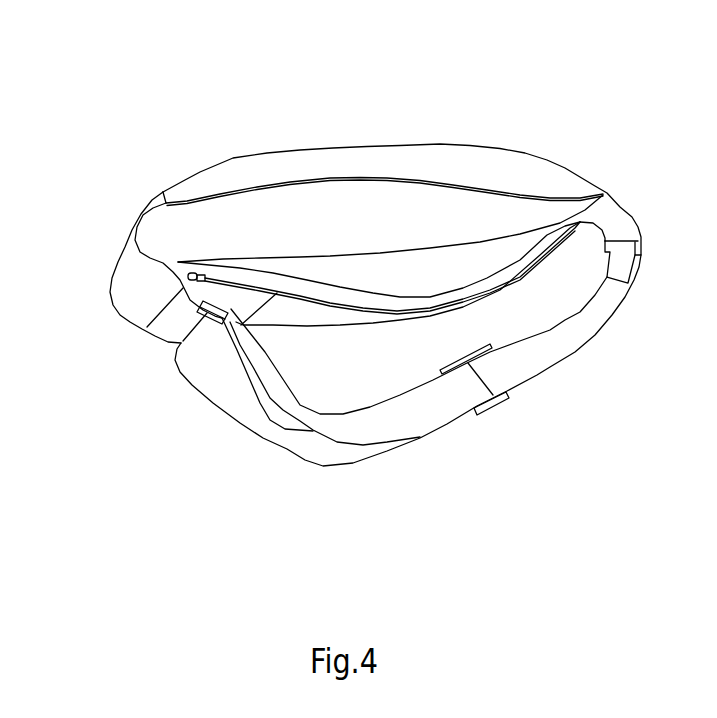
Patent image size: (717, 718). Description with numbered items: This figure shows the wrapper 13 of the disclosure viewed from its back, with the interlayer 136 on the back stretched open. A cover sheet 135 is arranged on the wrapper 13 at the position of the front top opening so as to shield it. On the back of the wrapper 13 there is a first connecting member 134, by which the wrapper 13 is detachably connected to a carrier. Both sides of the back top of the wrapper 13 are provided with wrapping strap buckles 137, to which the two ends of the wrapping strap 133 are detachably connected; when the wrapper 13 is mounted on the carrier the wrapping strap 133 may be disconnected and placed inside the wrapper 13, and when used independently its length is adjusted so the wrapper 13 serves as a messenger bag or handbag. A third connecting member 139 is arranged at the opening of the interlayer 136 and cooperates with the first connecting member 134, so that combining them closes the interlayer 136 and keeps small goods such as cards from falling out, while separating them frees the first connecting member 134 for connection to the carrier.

The wrapper 13 is at (105, 254).
The wrapping strap 133 is at (419, 419).
The first connecting member 134 is at (190, 200).
The cover sheet 135 is at (459, 158).
The interlayer 136 is at (428, 283).
The wrapping strap buckle 137 is at (208, 313).
The third connecting member 139 is at (218, 321).